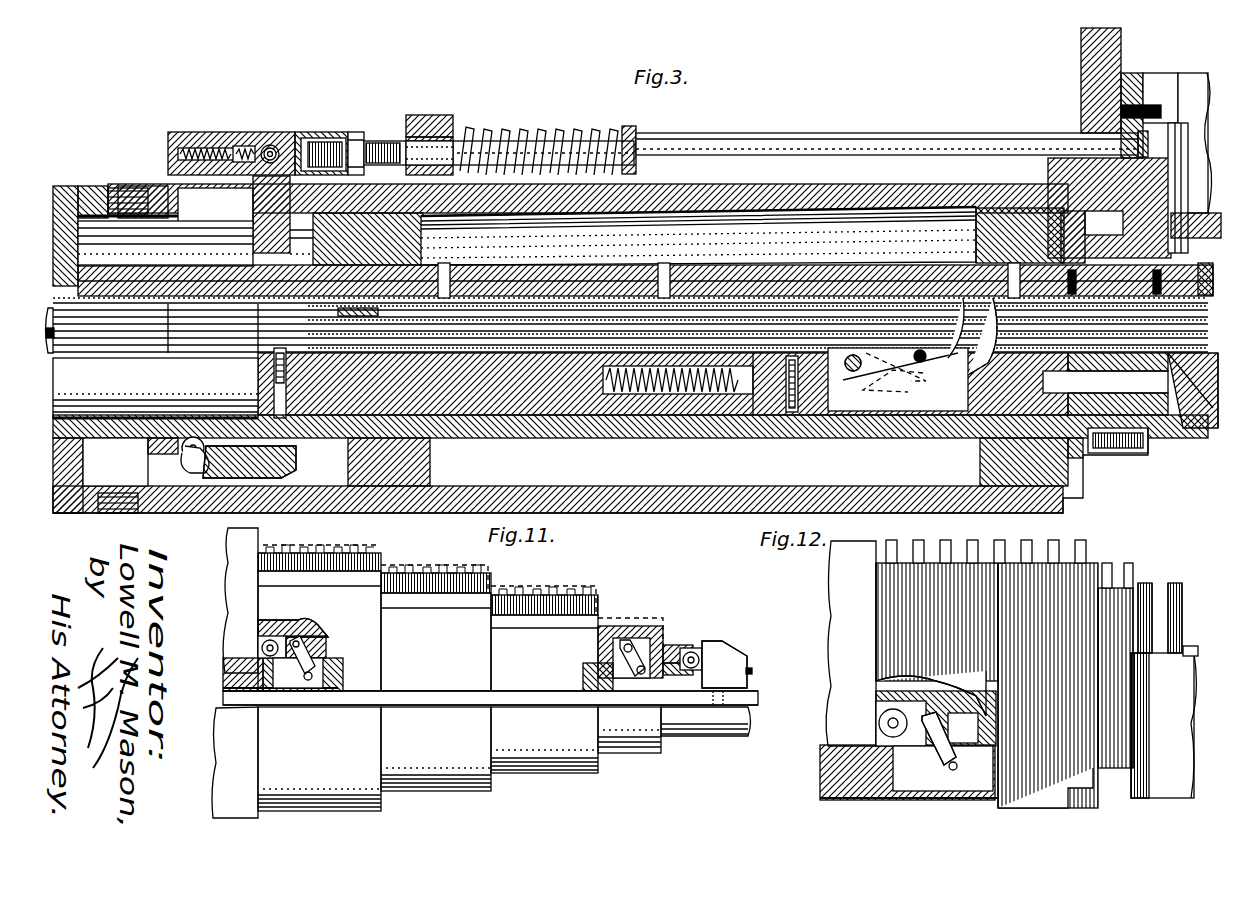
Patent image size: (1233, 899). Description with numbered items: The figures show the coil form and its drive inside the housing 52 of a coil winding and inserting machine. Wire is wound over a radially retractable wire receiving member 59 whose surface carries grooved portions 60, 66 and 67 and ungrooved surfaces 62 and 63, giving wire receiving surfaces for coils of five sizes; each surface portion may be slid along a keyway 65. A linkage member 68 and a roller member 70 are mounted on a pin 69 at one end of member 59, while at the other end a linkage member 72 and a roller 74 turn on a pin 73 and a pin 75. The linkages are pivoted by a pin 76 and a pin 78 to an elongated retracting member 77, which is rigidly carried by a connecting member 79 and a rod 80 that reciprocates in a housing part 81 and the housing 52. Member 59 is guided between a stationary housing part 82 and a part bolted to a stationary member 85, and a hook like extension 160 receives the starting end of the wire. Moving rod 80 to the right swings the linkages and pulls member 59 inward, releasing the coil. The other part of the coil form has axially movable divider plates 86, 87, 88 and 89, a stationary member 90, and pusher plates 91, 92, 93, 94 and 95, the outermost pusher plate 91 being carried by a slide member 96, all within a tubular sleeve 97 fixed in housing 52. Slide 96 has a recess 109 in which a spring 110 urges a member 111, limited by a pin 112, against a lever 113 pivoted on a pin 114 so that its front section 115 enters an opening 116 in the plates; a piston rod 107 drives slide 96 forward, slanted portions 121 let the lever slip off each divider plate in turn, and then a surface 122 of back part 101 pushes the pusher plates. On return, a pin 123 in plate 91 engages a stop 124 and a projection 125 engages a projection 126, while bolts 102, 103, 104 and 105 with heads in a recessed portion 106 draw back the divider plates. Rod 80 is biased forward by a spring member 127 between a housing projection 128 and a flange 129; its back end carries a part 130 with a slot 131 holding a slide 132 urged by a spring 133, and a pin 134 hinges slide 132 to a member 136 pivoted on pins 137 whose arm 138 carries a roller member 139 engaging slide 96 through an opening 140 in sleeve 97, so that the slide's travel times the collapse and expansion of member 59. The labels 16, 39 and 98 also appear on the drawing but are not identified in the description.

In FIG. 3, the section line 16 is at (146, 110).
In FIG. 12, the gear teeth 39 is at (1082, 540).
In FIG. 3, the housing 52 is at (1058, 486).
In FIG. 11, the wire receiving member 59 is at (262, 595).
In FIG. 12, the wire receiving member 59 is at (1182, 672).
In FIG. 11, the grooved portion 60 is at (552, 588).
In FIG. 11, the surface 62 is at (638, 618).
In FIG. 11, the surface 63 is at (688, 640).
In FIG. 12, the keyway 65 is at (1183, 638).
In FIG. 11, the grooved portion 66 is at (418, 565).
In FIG. 12, the grooved portion 66 is at (1167, 575).
In FIG. 11, the grooved portion 67 is at (333, 537).
In FIG. 11, the linkage member 68 is at (612, 648).
In FIG. 11, the pin 69 is at (618, 636).
In FIG. 11, the roller member 70 is at (694, 650).
In FIG. 11, the linkage member 72 is at (300, 640).
In FIG. 12, the linkage member 72 is at (928, 748).
In FIG. 11, the pin 73 is at (290, 640).
In FIG. 12, the pin 73 is at (926, 715).
In FIG. 11, the roller 74 is at (254, 638).
In FIG. 12, the roller 74 is at (872, 718).
In FIG. 12, the pin 75 is at (880, 712).
In FIG. 11, the pin 76 is at (575, 664).
In FIG. 3, the retracting member 77 is at (1185, 205).
In FIG. 11, the retracting member 77 is at (215, 662).
In FIG. 12, the retracting member 77 is at (815, 765).
In FIG. 11, the pin 78 is at (296, 668).
In FIG. 12, the pin 78 is at (940, 760).
In FIG. 3, the connecting member 79 is at (1170, 152).
In FIG. 3, the rod 80 is at (970, 126).
In FIG. 3, the housing part 81 is at (1122, 70).
In FIG. 11, the stationary housing part 82 is at (228, 608).
In FIG. 12, the stationary housing part 82 is at (828, 596).
In FIG. 3, the stationary member 85 is at (1190, 252).
In FIG. 3, the divider plate 86 is at (1130, 290).
In FIG. 11, the divider plate 86 is at (319, 691).
In FIG. 3, the divider plate 87 is at (1105, 290).
In FIG. 11, the divider plate 87 is at (436, 692).
In FIG. 3, the divider plate 88 is at (1078, 290).
In FIG. 11, the divider plate 88 is at (544, 694).
In FIG. 3, the divider plate 89 is at (1050, 290).
In FIG. 11, the divider plate 89 is at (720, 648).
In FIG. 3, the stationary member 90 is at (1108, 250).
In FIG. 11, the stationary member 90 is at (490, 713).
In FIG. 3, the pusher plate 91 is at (920, 256).
In FIG. 3, the pusher plate 92 is at (885, 256).
In FIG. 3, the pusher plate 93 is at (855, 256).
In FIG. 3, the pusher plate 94 is at (822, 256).
In FIG. 3, the pusher plate 95 is at (790, 256).
In FIG. 3, the slide member 96 is at (565, 390).
In FIG. 3, the tubular sleeve 97 is at (525, 410).
In FIG. 3, the screw 98 is at (438, 270).
In FIG. 3, the back part 101 is at (60, 395).
In FIG. 3, the bolt 102 is at (195, 345).
In FIG. 3, the bolt 103 is at (178, 345).
In FIG. 3, the bolt 104 is at (215, 345).
In FIG. 3, the bolt 105 is at (240, 345).
In FIG. 3, the recessed portion 106 is at (48, 348).
In FIG. 3, the piston rod 107 is at (38, 300).
In FIG. 3, the recess 109 is at (636, 390).
In FIG. 3, the spring 110 is at (695, 390).
In FIG. 3, the member 111 is at (757, 390).
In FIG. 3, the pin 112 is at (786, 405).
In FIG. 3, the lever 113 is at (882, 370).
In FIG. 3, the pin 114 is at (848, 380).
In FIG. 3, the front section 115 is at (1000, 320).
In FIG. 3, the opening 116 is at (972, 310).
In FIG. 3, the slanted portion 121 is at (1012, 345).
In FIG. 3, the surface 122 is at (160, 296).
In FIG. 3, the pin 123 is at (266, 375).
In FIG. 3, the stop 124 is at (250, 296).
In FIG. 3, the projection 125 is at (355, 312).
In FIG. 3, the projection 126 is at (264, 135).
In FIG. 3, the spring member 127 is at (505, 118).
In FIG. 3, the housing projection 128 is at (447, 110).
In FIG. 3, the flange 129 is at (630, 130).
In FIG. 3, the part 130 is at (345, 124).
In FIG. 3, the slot 131 is at (236, 137).
In FIG. 3, the slide 132 is at (260, 140).
In FIG. 3, the spring 133 is at (184, 122).
In FIG. 3, the pin 134 is at (300, 126).
In FIG. 3, the member 136 is at (244, 190).
In FIG. 3, the pins 137 is at (212, 452).
In FIG. 3, the arm 138 is at (170, 452).
In FIG. 3, the roller member 139 is at (174, 440).
In FIG. 3, the opening 140 is at (140, 434).
In FIG. 11, the hook like extension 160 is at (745, 663).